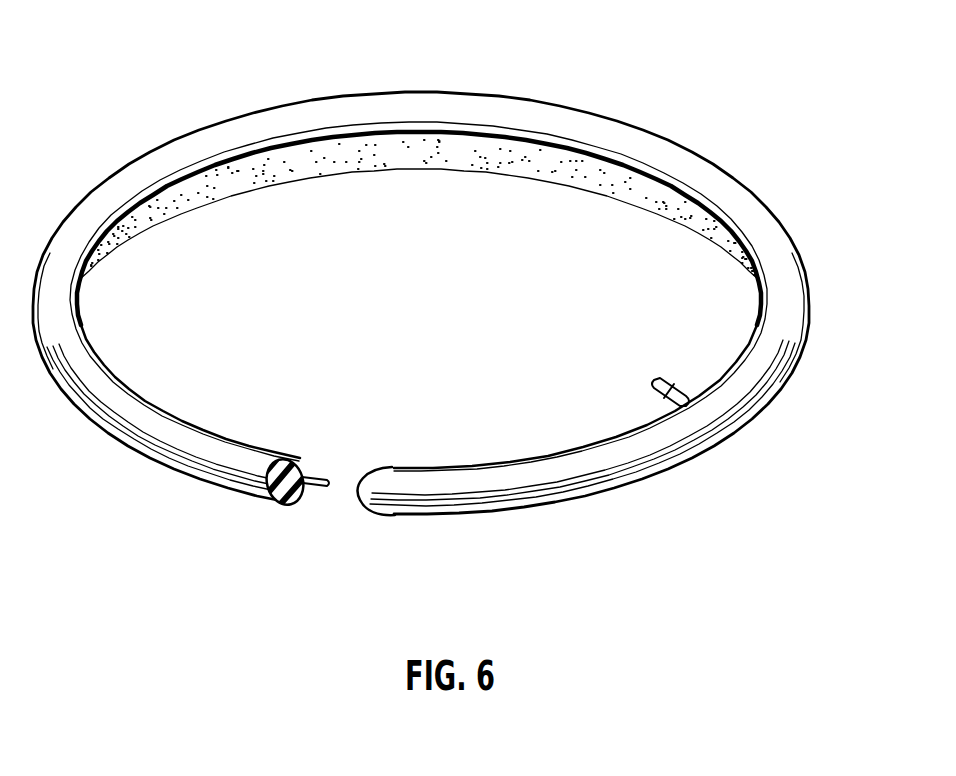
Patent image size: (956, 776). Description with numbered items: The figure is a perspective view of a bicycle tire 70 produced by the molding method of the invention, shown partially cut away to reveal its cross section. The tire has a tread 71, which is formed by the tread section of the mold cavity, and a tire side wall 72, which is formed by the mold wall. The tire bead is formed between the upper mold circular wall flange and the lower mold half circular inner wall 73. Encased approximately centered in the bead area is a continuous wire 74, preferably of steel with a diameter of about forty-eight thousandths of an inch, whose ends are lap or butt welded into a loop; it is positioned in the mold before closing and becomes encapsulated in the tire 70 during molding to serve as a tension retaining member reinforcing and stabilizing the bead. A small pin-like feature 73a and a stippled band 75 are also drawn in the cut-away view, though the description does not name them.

The bicycle tire 70 is at (450, 266).
The tread 71 is at (808, 322).
The tire side wall 72 is at (748, 217).
The lower mold half circular inner wall 73 is at (703, 210).
The locating pin 73a is at (667, 378).
The continuous wire 74 is at (330, 474).
The adhesive layer 75 is at (236, 166).